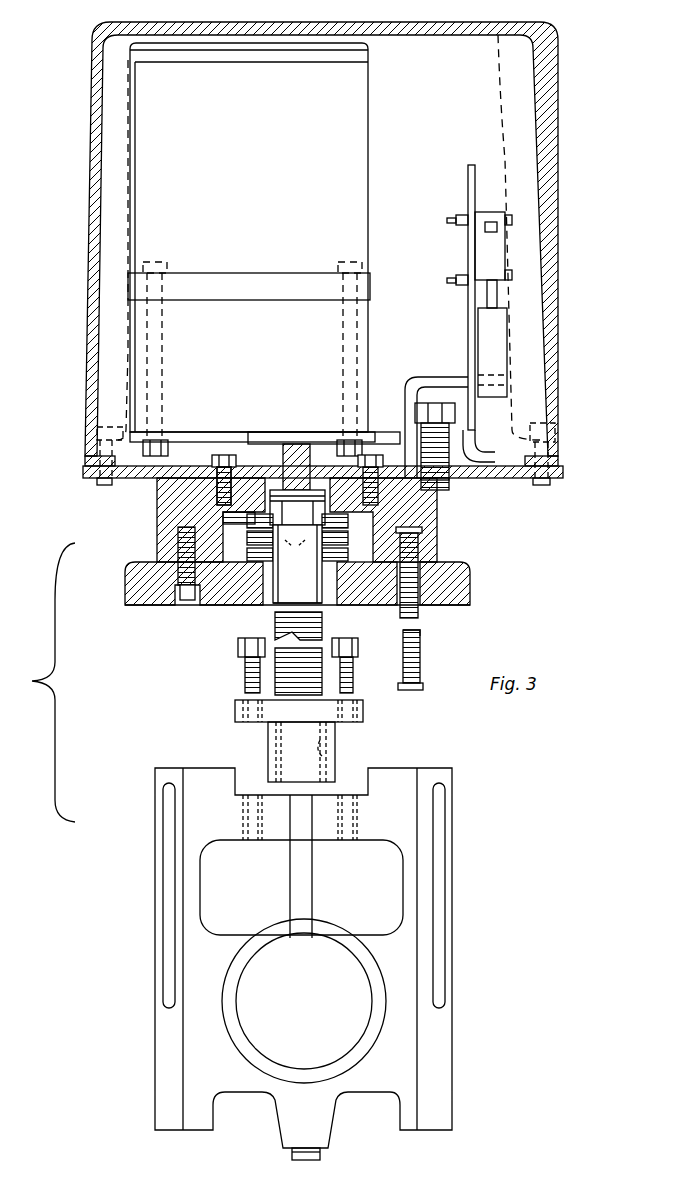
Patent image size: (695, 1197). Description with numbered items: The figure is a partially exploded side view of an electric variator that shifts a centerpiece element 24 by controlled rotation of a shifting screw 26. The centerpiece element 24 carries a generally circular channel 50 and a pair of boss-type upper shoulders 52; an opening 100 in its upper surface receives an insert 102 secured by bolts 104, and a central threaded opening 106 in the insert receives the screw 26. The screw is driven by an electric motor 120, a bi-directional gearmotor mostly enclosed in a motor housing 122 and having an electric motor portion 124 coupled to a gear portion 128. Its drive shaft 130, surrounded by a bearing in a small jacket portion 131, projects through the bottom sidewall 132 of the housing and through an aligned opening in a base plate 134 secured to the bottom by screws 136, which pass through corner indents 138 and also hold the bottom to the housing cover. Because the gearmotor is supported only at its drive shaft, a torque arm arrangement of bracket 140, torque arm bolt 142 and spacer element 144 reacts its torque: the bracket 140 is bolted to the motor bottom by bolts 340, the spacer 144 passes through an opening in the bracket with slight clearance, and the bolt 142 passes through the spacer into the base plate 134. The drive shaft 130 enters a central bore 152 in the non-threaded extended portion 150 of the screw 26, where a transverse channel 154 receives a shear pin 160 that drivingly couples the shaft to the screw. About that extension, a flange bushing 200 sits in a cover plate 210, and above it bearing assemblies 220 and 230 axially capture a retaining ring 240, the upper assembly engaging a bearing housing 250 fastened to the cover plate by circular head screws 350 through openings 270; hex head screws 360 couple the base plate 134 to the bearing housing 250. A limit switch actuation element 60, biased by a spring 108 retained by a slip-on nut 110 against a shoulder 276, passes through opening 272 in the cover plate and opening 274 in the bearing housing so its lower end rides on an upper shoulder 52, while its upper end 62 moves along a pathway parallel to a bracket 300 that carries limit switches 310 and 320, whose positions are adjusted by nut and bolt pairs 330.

The centerpiece element 24 is at (452, 862).
The shifting screw 26 is at (275, 624).
The circular channel 50 is at (350, 1038).
The upper shoulders 52 is at (168, 768).
The limit switch actuation element 60 is at (422, 636).
The upper end of actuation element 62 is at (444, 377).
The opening 100 is at (250, 772).
The insert 102 is at (365, 712).
The bolts 104 is at (238, 648).
The threaded opening 106 is at (324, 748).
The spring 108 is at (421, 651).
The slip-on nut 110 is at (412, 690).
The electric motor 120 is at (388, 106).
The motor housing 122 is at (97, 34).
The electric motor portion 124 is at (370, 152).
The gear portion 128 is at (370, 334).
The drive shaft 130 is at (280, 440).
The jacket portion 131 is at (300, 446).
The sidewall (bottom) 132 is at (195, 440).
The base plate 134 is at (140, 478).
The screws 136 is at (92, 410).
The corner indents 138 is at (515, 99).
The bracket 140 is at (418, 410).
The torque arm bolt 142 is at (447, 483).
The spacer element 144 is at (466, 445).
The extended portion 150 is at (323, 604).
The central bore 152 is at (297, 564).
The transverse channel 154 is at (326, 500).
The shear pin 160 is at (222, 495).
The flange bushing 200 is at (338, 578).
The plate 210 is at (470, 566).
The bearing assembly 220 is at (246, 540).
The bearing assembly 230 is at (223, 517).
The retaining ring 240 is at (348, 536).
The bearing housing 250 is at (155, 517).
The openings 270 is at (178, 578).
The opening 272 is at (412, 588).
The opening 274 is at (419, 541).
The shoulder 276 is at (423, 528).
The bracket 300 is at (470, 168).
The limit switch 310 is at (508, 245).
The limit switch 320 is at (508, 352).
The nut and bolt pairs 330 is at (460, 215).
The bolts 340 is at (157, 262).
The circular head screws 350 is at (188, 605).
The hex head screws 360 is at (224, 455).